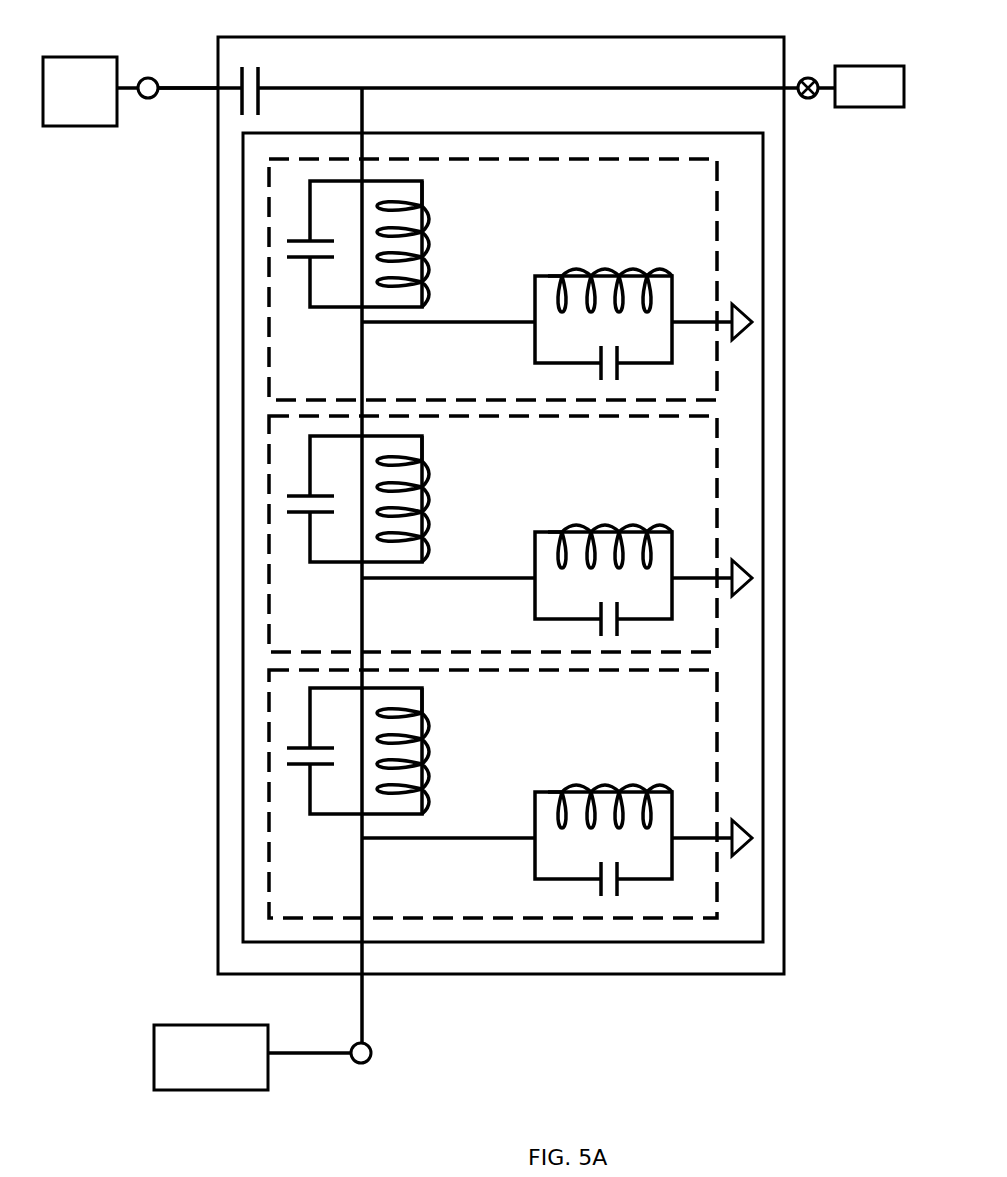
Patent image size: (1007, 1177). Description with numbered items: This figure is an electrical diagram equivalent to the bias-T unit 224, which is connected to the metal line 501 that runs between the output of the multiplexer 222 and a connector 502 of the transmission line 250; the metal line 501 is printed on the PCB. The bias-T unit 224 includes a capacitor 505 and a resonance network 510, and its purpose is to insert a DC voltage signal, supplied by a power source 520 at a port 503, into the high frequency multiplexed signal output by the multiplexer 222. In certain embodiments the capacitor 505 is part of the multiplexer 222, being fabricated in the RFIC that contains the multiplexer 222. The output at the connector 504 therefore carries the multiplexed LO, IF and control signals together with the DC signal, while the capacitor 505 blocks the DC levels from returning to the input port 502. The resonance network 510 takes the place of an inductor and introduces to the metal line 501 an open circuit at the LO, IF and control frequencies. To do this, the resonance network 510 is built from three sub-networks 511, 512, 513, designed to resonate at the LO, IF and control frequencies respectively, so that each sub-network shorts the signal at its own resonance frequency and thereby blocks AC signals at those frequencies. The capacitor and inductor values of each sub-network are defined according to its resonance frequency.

The bias-T unit 224 is at (638, 37).
The multiplexer 222 is at (80, 91).
The transmission line 250 is at (869, 86).
The metal line 501 is at (194, 90).
The connector 502 is at (148, 77).
The port 503 is at (372, 1042).
The connector 504 is at (808, 77).
The capacitor 505 is at (260, 78).
The resonance network 510 is at (467, 133).
The sub-network 511 is at (717, 230).
The sub-network 512 is at (717, 488).
The sub-network 513 is at (717, 740).
The power source 520 is at (188, 1023).